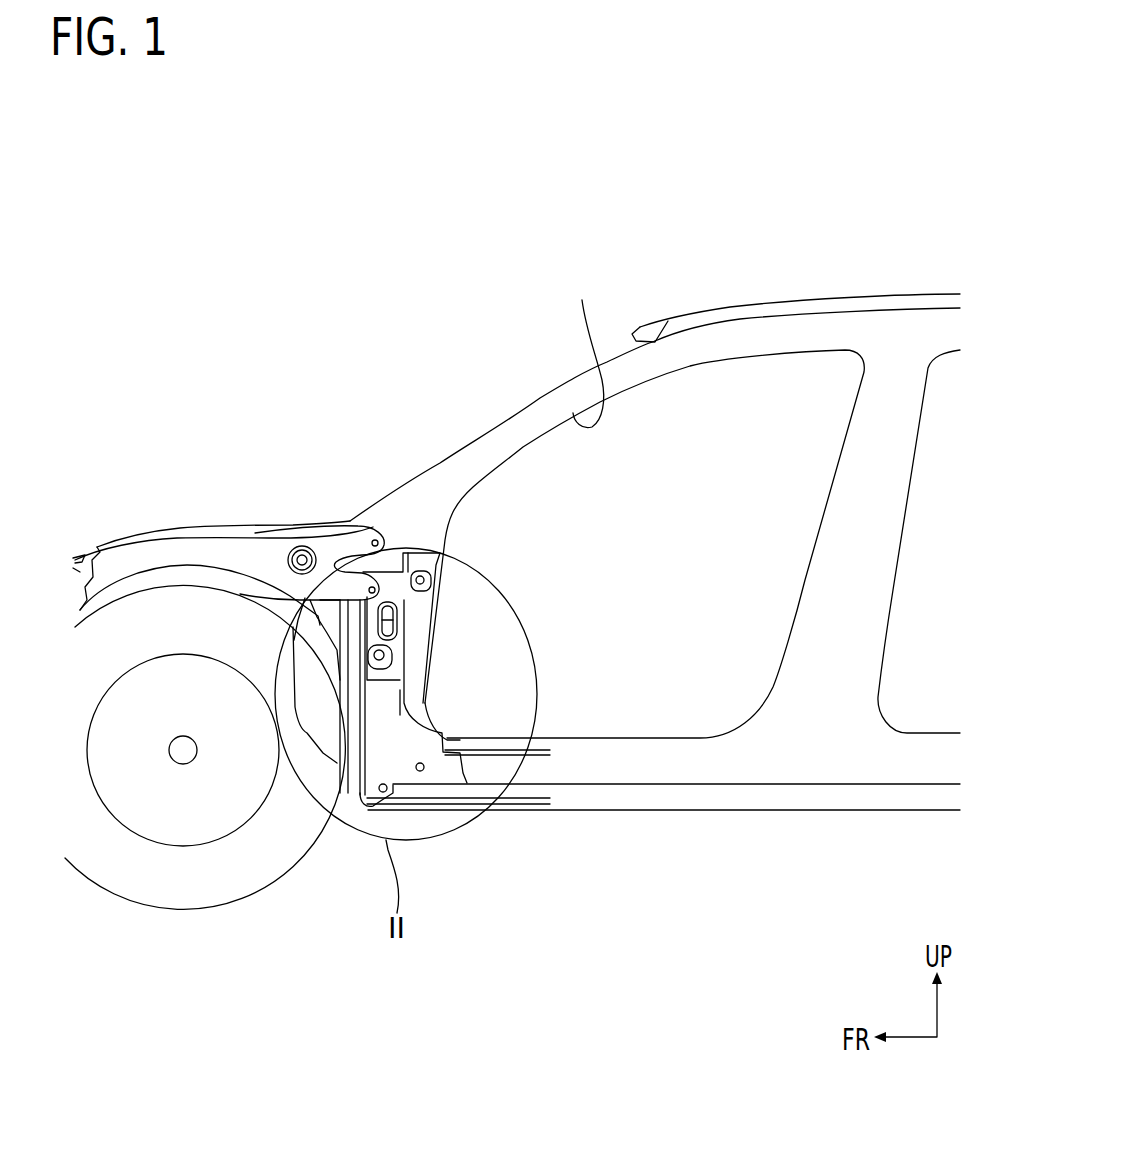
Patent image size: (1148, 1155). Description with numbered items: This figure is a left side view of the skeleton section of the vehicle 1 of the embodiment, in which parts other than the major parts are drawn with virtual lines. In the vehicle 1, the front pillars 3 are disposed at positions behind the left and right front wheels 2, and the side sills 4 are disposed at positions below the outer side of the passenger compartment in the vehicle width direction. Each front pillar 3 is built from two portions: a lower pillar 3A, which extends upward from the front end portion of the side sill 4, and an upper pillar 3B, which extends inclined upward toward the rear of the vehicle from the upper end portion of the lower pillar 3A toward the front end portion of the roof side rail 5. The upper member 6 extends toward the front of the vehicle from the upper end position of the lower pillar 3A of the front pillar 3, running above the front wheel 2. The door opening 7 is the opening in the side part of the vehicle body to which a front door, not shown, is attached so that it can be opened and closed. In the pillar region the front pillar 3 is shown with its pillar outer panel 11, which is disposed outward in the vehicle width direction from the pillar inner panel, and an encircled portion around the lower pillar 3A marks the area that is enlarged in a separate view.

The vehicle 1 is at (697, 244).
The front wheel 2 is at (177, 910).
The front pillar 3 is at (477, 642).
The lower pillar 3A is at (348, 777).
The upper pillar 3B is at (512, 414).
The side sill 4 is at (513, 810).
The roof side rail 5 is at (799, 326).
The upper member 6 is at (177, 535).
The door opening 7 is at (588, 345).
The pillar outer panel 11 is at (403, 697).